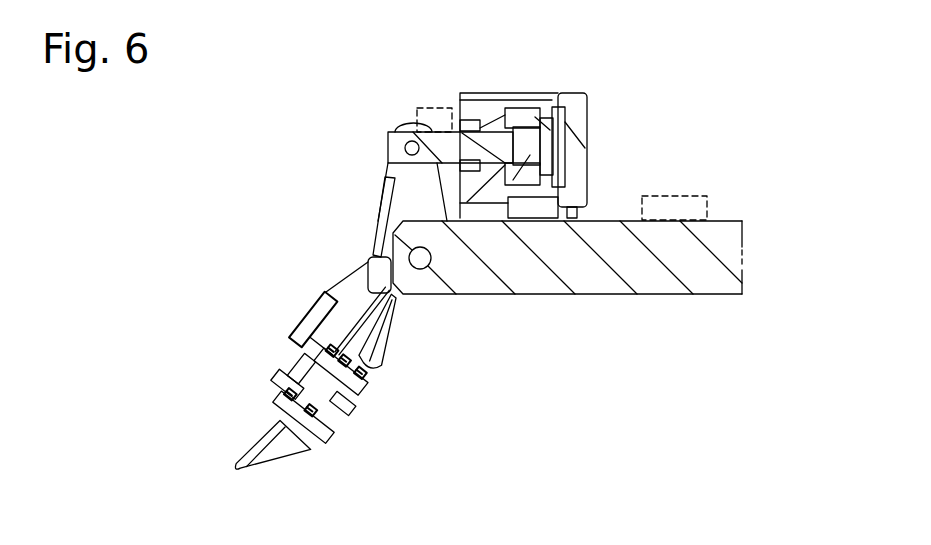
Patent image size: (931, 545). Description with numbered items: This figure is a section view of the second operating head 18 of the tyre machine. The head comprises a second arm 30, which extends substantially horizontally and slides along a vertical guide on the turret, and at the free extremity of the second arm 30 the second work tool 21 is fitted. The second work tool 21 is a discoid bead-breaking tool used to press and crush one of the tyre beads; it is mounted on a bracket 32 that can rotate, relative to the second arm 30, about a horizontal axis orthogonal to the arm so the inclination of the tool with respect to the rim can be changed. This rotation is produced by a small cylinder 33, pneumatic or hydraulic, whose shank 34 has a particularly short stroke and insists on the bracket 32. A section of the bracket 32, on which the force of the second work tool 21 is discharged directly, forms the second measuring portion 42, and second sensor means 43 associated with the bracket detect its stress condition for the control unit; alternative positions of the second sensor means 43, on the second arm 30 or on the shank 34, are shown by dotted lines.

The second operating head 18 is at (238, 410).
The second work tool 21 is at (367, 367).
The second arm 30 is at (680, 260).
The bracket 32 is at (412, 192).
The small cylinder 33 is at (576, 114).
The shank 34 is at (398, 142).
The second measuring portion 42 is at (362, 300).
The second sensor means 43 is at (437, 108).